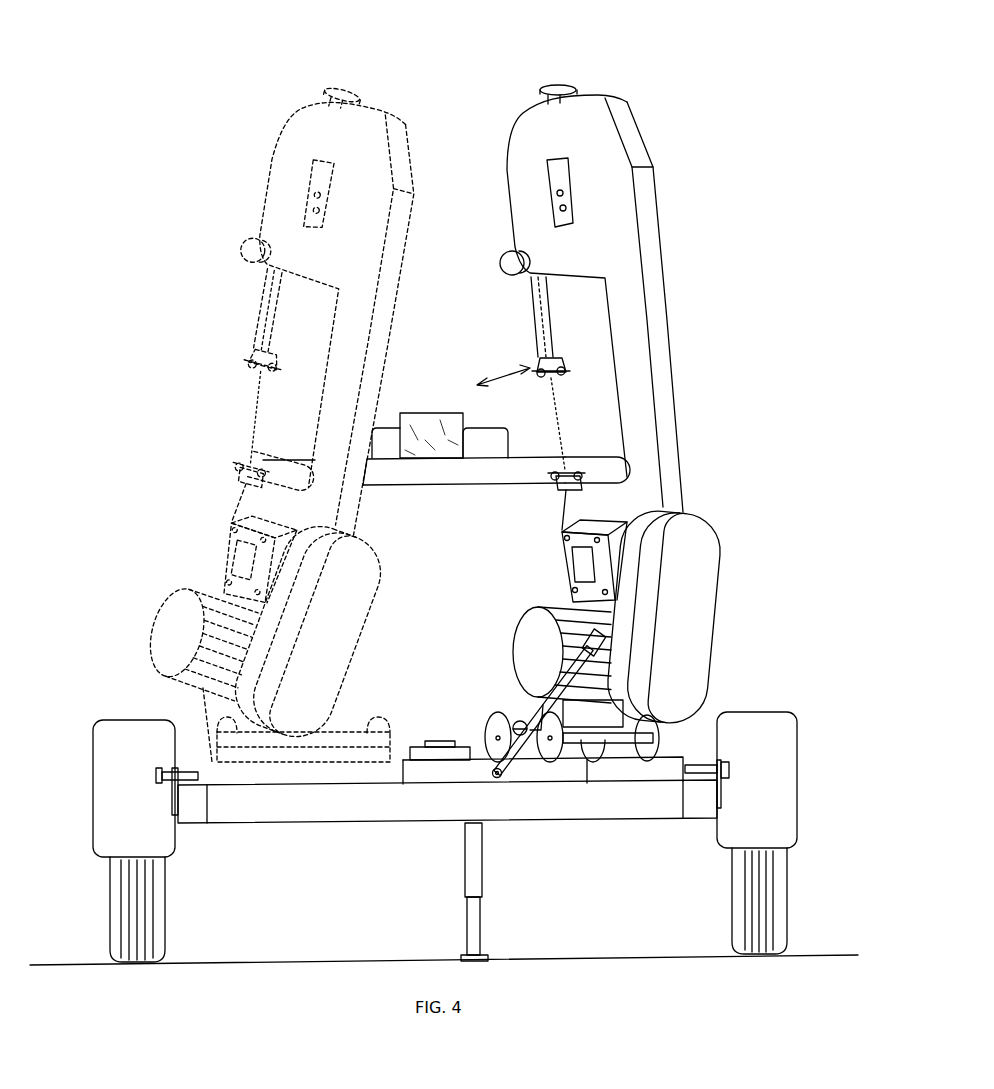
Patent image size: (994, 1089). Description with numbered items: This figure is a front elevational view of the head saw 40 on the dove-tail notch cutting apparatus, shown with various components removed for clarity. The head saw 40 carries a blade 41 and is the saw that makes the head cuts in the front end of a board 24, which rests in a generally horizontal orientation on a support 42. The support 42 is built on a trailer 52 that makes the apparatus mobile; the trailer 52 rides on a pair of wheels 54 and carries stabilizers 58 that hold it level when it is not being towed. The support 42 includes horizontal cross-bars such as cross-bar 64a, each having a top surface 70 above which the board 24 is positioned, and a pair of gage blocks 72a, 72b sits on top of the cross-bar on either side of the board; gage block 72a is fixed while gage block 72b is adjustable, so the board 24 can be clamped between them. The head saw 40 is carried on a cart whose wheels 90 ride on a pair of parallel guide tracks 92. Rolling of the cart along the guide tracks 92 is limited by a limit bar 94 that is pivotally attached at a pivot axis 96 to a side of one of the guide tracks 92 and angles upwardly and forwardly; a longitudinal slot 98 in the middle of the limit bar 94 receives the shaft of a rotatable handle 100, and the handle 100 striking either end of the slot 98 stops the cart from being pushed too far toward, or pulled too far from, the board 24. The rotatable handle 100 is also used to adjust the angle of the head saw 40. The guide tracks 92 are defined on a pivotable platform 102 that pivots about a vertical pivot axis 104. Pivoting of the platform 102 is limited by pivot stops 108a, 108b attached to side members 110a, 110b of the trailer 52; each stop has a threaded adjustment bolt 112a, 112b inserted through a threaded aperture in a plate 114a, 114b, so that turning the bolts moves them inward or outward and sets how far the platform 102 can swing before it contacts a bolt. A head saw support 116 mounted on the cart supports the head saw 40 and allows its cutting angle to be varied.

The board 24 is at (430, 413).
The head saw 40 is at (623, 122).
The blade 41 is at (560, 425).
The support 42 is at (293, 459).
The trailer 52 is at (527, 817).
The wheels 54 is at (165, 912).
The stabilizers 58 is at (482, 880).
The cross-bar 64a is at (427, 470).
The top surface 70 is at (522, 457).
The gage block 72a is at (382, 448).
The gage block 72b is at (495, 447).
The wheels 90 is at (495, 720).
The guide tracks 92 is at (575, 772).
The limit bar 94 is at (568, 612).
The pivot axis 96 is at (493, 777).
The longitudinal slot 98 is at (533, 660).
The rotatable handle 100 is at (518, 725).
The pivotable platform 102 is at (445, 772).
The vertical pivot axis 104 is at (440, 738).
The pivot stop 108a is at (103, 830).
The pivot stop 108b is at (782, 832).
The side member 110a is at (193, 803).
The side member 110b is at (695, 805).
The threaded adjustment bolt 112a is at (155, 772).
The threaded adjustment bolt 112b is at (730, 772).
The plate 114a is at (174, 808).
The plate 114b is at (715, 808).
The head saw support 116 is at (597, 723).